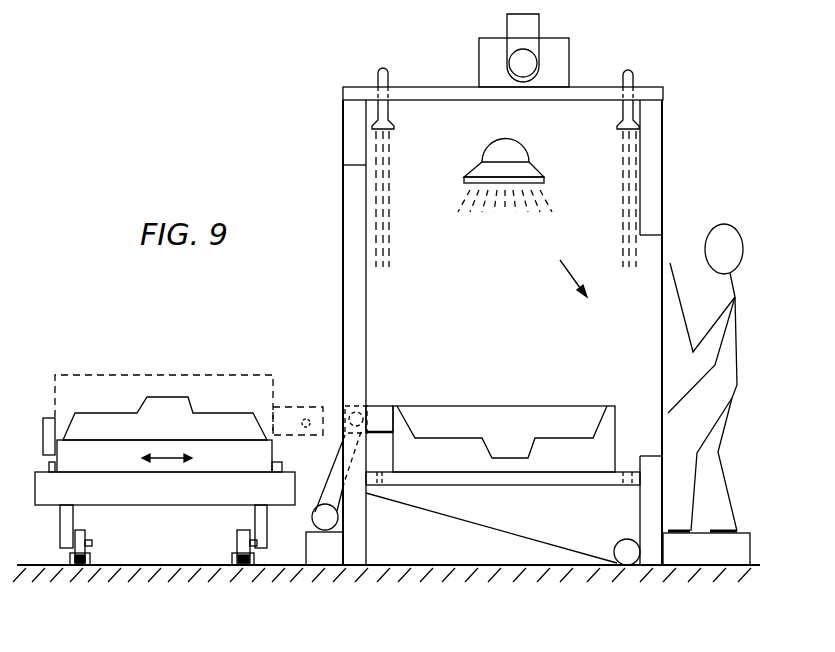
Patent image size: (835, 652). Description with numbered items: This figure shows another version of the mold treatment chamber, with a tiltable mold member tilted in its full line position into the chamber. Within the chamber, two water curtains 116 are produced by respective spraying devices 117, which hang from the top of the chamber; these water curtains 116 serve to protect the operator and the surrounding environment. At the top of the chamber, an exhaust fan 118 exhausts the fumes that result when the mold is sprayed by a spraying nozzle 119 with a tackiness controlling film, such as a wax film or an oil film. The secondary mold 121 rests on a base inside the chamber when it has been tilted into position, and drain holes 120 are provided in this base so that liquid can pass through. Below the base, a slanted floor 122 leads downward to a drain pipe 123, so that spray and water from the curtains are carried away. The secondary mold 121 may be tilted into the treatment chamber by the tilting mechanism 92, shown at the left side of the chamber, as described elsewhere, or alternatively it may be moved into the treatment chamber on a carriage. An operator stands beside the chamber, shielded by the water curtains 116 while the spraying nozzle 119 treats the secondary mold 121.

The tilting mechanism 92 is at (322, 485).
The water curtains 116 is at (386, 236).
The spraying devices 117 is at (392, 126).
The exhaust fan 118 is at (560, 50).
The spraying nozzle 119 is at (536, 163).
The drain holes 120 is at (378, 485).
The secondary mold 121 is at (538, 415).
The slanted floor 122 is at (503, 518).
The drain pipe 123 is at (627, 566).